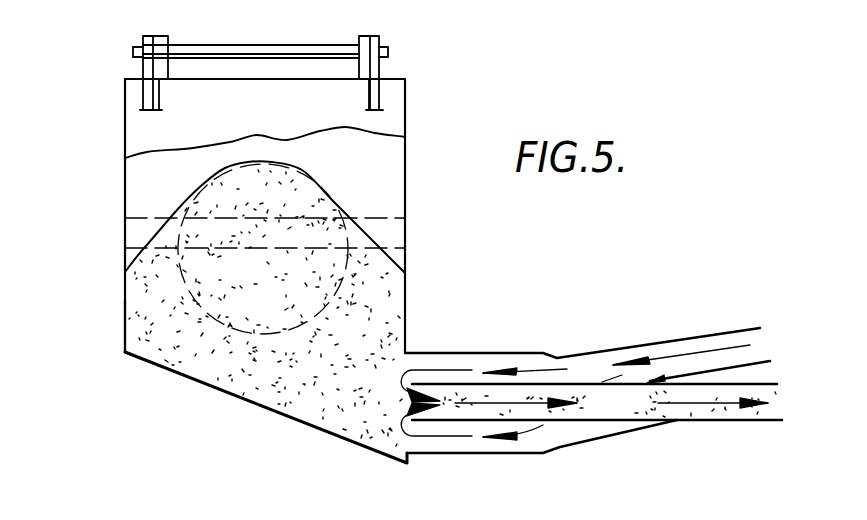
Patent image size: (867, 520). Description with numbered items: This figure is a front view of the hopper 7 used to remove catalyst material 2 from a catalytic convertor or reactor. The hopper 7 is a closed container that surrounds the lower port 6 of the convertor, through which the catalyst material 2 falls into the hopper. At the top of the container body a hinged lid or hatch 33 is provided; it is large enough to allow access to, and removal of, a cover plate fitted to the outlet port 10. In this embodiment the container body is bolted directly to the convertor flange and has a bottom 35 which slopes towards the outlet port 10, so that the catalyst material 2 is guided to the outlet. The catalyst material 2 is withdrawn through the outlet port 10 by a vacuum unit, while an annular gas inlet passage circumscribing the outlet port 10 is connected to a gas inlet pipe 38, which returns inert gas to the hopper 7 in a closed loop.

The hinged lid or hatch 33 is at (388, 123).
The lower port 6 is at (312, 176).
The catalyst material 2 is at (353, 365).
The bottom 35 is at (333, 434).
The hopper 7 is at (148, 365).
The gas inlet pipe 38 is at (680, 340).
The outlet port 10 is at (743, 421).